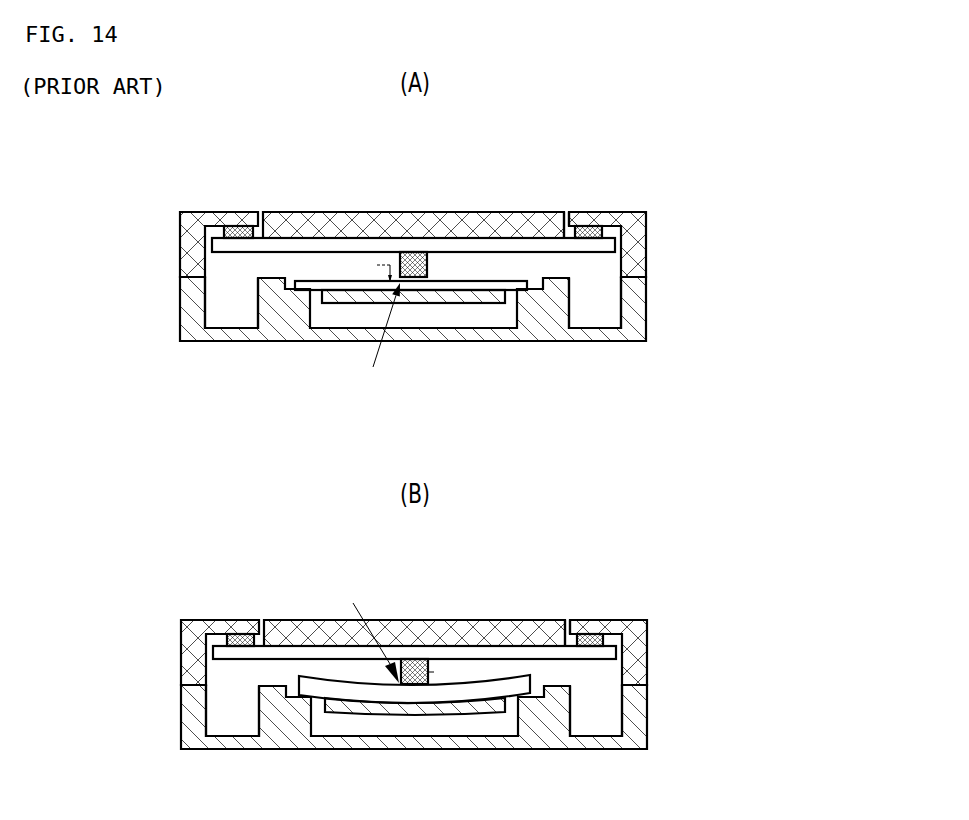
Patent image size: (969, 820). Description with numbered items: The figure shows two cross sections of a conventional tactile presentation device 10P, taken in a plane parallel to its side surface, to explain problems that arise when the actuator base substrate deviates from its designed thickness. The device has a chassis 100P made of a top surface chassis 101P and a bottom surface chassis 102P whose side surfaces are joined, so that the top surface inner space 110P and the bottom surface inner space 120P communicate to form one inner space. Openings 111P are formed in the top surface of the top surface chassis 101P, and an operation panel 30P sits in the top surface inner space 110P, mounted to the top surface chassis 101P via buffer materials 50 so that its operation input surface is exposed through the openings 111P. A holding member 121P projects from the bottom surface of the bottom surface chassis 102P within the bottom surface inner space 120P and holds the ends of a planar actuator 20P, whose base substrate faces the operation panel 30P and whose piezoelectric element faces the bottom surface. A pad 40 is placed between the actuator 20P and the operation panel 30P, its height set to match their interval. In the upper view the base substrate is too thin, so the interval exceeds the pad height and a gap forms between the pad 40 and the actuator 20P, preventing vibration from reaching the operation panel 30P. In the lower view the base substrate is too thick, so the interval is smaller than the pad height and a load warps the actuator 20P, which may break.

The tactile presentation device 10P is at (590, 138).
The chassis 100P is at (692, 186).
The top surface chassis 101P is at (633, 225).
The bottom surface chassis 102P is at (643, 298).
The top surface inner space 110P is at (631, 251).
The openings 111P is at (564, 200).
The bottom surface inner space 120P is at (595, 333).
The holding member 121P is at (288, 333).
The actuator 20P is at (440, 318).
The operation panel 30P is at (372, 212).
The pad 40 is at (432, 252).
The buffer materials 50 is at (232, 224).